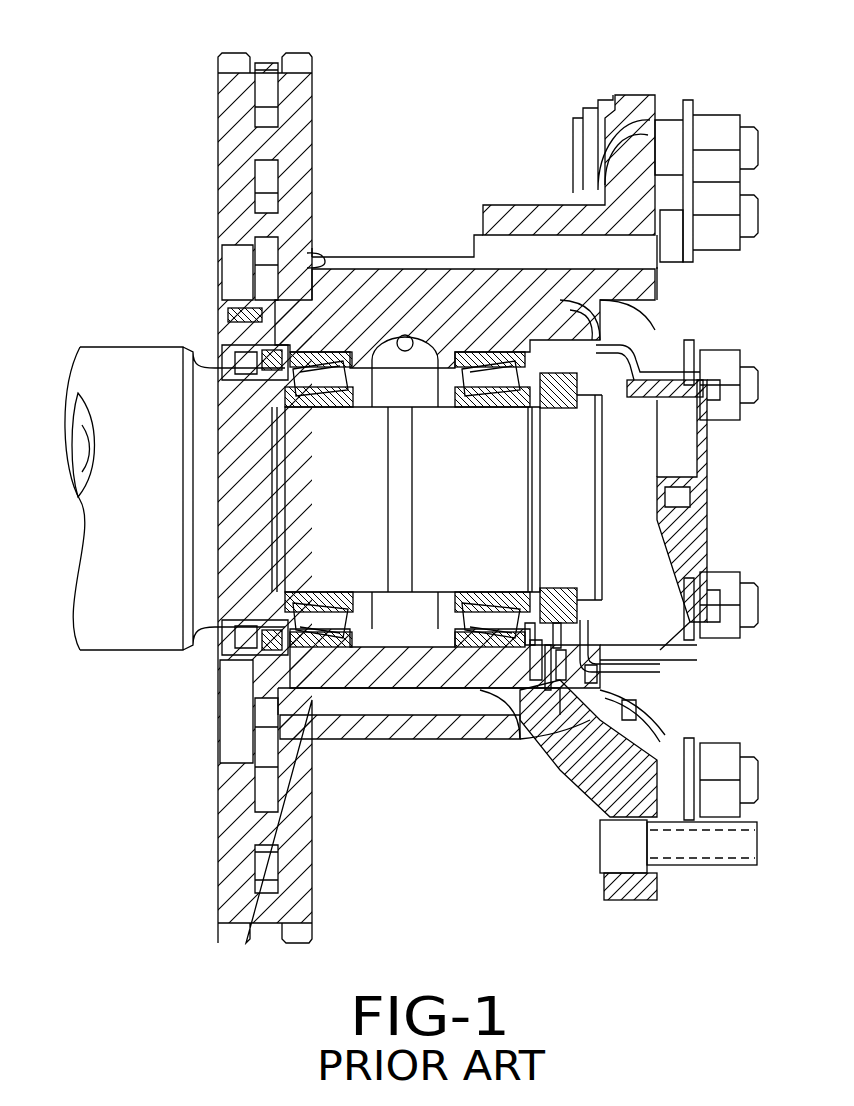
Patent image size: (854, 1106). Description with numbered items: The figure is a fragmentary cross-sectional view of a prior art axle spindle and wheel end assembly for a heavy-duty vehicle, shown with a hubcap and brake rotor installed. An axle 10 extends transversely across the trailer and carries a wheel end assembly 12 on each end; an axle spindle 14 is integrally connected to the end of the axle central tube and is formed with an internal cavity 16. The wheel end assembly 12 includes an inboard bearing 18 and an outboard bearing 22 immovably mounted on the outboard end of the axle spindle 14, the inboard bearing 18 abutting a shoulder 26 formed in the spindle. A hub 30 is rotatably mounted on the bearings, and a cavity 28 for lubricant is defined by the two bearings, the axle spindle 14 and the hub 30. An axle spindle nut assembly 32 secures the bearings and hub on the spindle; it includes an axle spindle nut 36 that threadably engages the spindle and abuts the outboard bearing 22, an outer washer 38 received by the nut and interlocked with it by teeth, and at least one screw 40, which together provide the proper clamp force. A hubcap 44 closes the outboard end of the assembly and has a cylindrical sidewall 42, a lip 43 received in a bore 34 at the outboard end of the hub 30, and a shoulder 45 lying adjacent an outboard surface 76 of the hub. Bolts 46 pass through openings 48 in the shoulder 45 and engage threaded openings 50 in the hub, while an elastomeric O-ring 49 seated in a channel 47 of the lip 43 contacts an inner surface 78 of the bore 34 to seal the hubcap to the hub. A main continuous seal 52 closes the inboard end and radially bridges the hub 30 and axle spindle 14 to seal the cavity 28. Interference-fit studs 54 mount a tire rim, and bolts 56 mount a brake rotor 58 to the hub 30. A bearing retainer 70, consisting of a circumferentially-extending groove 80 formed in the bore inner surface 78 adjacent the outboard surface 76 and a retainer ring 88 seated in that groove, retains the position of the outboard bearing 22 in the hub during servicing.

The axle 10 is at (155, 300).
The wheel end assembly 12 is at (515, 170).
The axle spindle 14 is at (97, 345).
The internal cavity 16 is at (80, 430).
The inboard bearing 18 is at (316, 350).
The outboard bearing 22 is at (480, 355).
The shoulder 26 is at (290, 412).
The cavity 28 is at (404, 345).
The hub 30 is at (656, 95).
The axle spindle nut assembly 32 is at (598, 378).
The bore 34 is at (584, 633).
The axle spindle nut 36 is at (578, 395).
The outer washer 38 is at (578, 405).
The screw 40 is at (582, 600).
The cylindrical sidewall 42 is at (594, 663).
The lip 43 is at (528, 650).
The hubcap 44 is at (708, 535).
The shoulder 45 is at (597, 675).
The bolts 46 is at (640, 730).
The channel 47 is at (558, 652).
The openings 48 is at (600, 708).
The elastomeric O-ring 49 is at (561, 660).
The threaded openings 50 is at (548, 660).
The main continuous seal 52 is at (224, 662).
The interference-fit studs 54 is at (668, 120).
The bolts 56 is at (668, 752).
The brake rotor 58 is at (218, 830).
The bearing retainer 70 is at (476, 680).
The outboard surface 76 is at (590, 345).
The inner surface 78 is at (590, 350).
The circumferentially-extending groove 80 is at (605, 330).
The retainer ring 88 is at (548, 652).